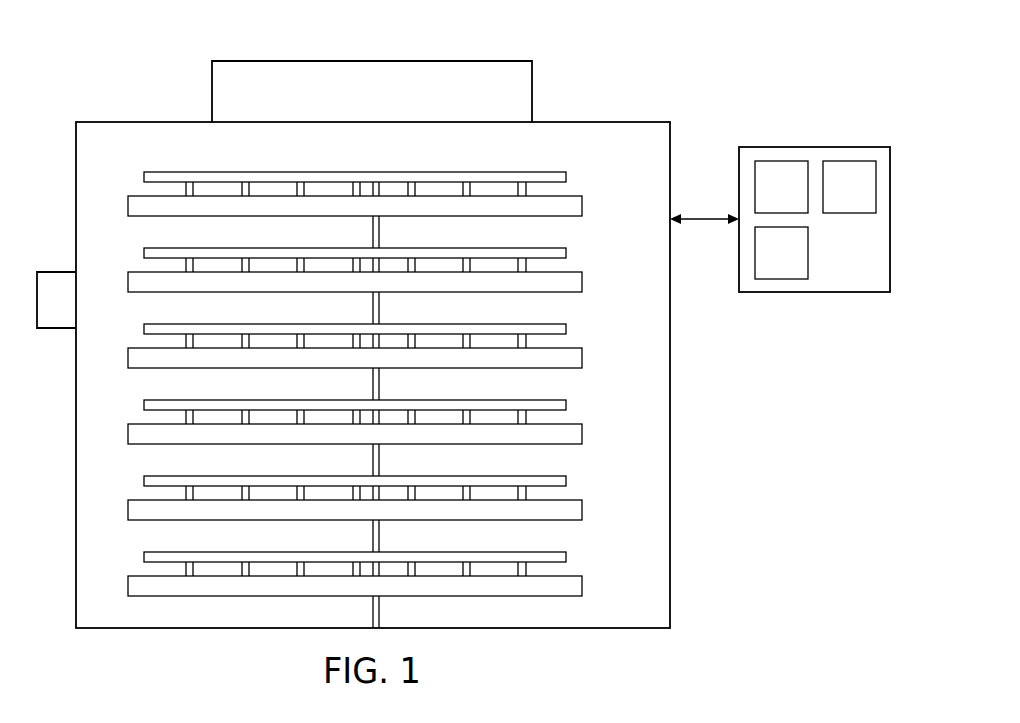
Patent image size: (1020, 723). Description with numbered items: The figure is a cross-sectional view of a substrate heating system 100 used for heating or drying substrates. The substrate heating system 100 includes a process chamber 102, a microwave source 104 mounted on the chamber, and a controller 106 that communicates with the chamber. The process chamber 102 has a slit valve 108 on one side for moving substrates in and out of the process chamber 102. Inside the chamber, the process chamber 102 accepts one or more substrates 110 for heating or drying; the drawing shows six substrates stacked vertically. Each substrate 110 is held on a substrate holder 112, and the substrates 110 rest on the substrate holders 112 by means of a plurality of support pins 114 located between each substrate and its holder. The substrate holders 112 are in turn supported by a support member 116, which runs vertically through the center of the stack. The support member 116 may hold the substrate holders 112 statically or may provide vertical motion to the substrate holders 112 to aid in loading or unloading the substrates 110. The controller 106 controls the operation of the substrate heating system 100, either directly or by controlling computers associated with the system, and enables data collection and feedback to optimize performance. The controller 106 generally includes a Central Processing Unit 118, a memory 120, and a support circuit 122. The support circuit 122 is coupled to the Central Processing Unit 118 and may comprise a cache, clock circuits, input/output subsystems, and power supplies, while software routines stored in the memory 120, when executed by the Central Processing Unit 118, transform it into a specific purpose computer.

The substrate heating system 100 is at (623, 34).
The process chamber 102 is at (622, 122).
The microwave source 104 is at (533, 76).
The controller 106 is at (776, 147).
The slit valve 108 is at (56, 271).
The substrate 110 is at (567, 177).
The substrate holder 112 is at (583, 202).
The support pin 114 is at (185, 192).
The support member 116 is at (380, 612).
The Central Processing Unit 118 is at (796, 197).
The memory 120 is at (864, 197).
The support circuit 122 is at (796, 263).